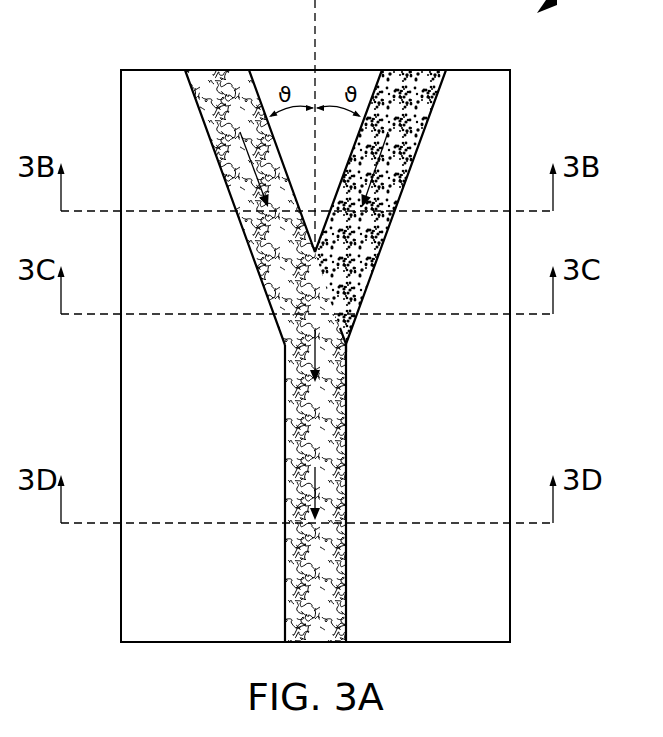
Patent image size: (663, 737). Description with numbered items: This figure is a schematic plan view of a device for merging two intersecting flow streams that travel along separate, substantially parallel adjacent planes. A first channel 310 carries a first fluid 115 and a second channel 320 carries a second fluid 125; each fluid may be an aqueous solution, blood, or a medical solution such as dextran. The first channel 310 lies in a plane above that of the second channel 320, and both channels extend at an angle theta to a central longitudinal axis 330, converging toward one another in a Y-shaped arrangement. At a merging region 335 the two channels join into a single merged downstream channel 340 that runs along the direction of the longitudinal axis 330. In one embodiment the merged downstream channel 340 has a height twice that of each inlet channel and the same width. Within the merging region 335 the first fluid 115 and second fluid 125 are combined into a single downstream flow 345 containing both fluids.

The first fluid 115 is at (203, 85).
The second fluid 125 is at (424, 80).
The first channel 310 is at (200, 114).
The second channel 320 is at (432, 110).
The central longitudinal axis 330 is at (314, 20).
The merging region 335 is at (346, 345).
The merged downstream channel 340 is at (347, 571).
The single downstream flow 345 is at (310, 376).